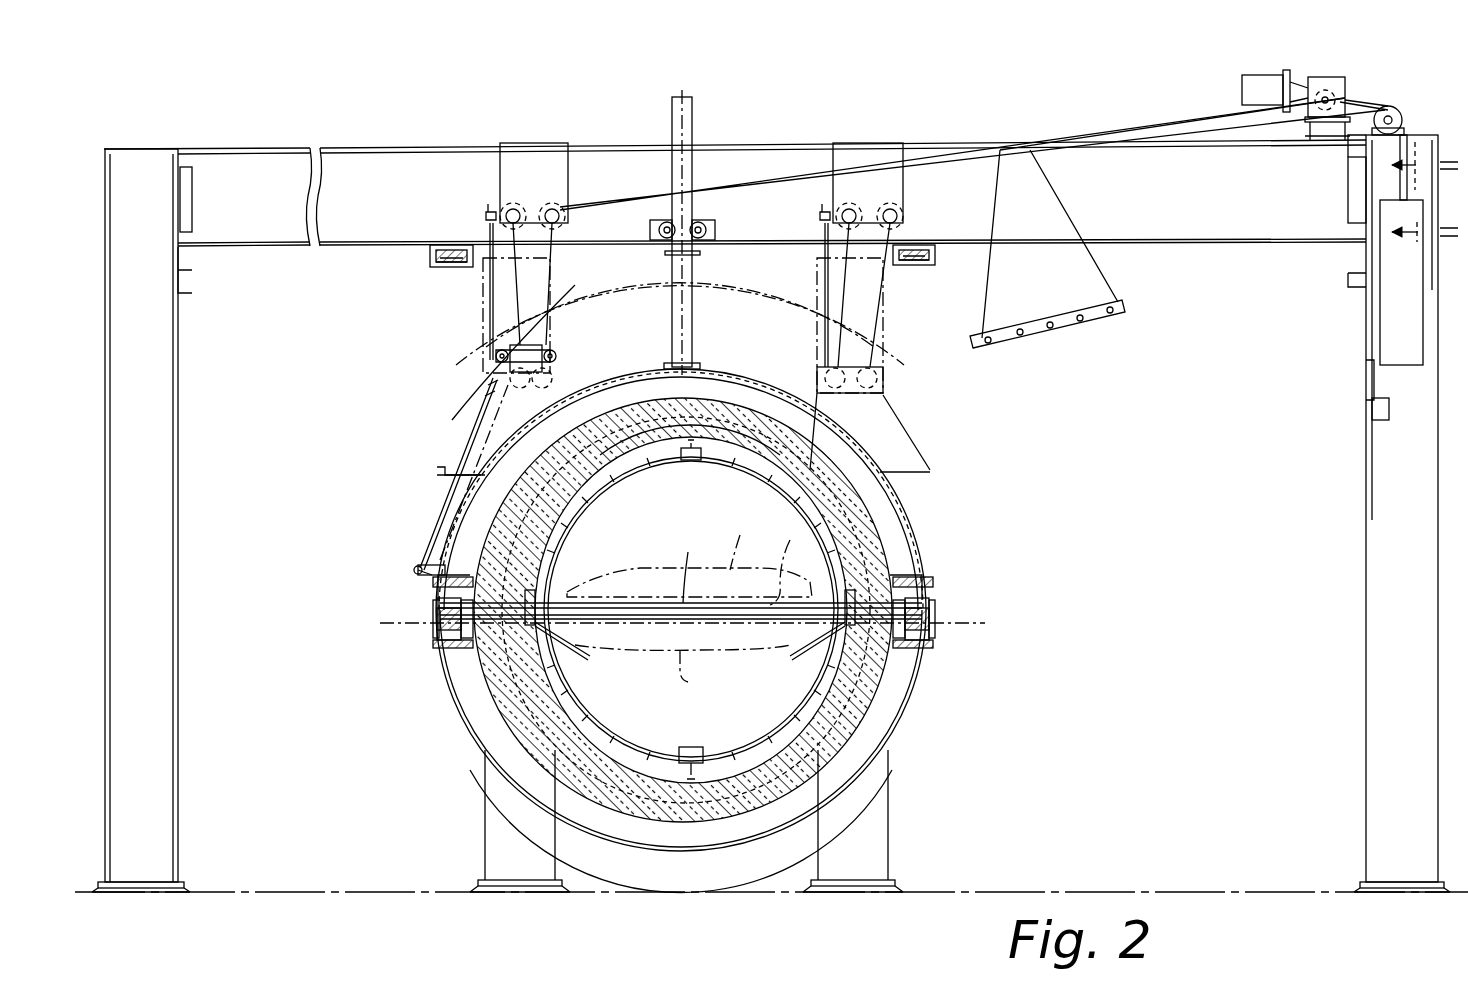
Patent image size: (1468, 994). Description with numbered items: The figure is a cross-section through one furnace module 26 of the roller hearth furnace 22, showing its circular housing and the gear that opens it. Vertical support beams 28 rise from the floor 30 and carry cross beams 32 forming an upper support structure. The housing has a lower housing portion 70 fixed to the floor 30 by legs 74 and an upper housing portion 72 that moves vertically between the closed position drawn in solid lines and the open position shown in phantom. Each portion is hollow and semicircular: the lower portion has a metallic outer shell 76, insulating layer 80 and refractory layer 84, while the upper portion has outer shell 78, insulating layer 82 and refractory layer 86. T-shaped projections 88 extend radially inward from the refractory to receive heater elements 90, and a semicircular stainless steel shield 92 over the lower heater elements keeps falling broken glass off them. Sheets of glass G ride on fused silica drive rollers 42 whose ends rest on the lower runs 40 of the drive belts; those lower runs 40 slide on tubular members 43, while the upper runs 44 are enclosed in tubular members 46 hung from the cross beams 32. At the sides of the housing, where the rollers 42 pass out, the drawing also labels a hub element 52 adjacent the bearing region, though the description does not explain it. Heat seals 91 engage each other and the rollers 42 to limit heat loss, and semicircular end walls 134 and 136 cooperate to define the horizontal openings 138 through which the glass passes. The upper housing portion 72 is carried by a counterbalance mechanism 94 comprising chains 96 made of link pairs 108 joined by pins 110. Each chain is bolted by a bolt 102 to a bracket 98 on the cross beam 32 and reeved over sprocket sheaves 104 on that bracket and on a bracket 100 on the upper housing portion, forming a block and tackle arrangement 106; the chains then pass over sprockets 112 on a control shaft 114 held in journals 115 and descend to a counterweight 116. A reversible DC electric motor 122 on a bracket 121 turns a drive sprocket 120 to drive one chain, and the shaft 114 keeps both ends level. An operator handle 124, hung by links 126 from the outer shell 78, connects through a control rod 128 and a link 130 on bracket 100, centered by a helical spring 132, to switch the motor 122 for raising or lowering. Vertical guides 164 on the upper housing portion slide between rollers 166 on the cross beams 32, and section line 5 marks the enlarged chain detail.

The section line 5- 5 is at (1421, 209).
The roller hearth furnace 22 is at (342, 140).
The furnace module 26 is at (315, 380).
The vertical support beam 28 is at (178, 452).
The floor 30 is at (362, 890).
The cross beam 32 is at (432, 148).
The lower run 40 is at (440, 630).
The drive roller 42 is at (626, 603).
The tubular member 43 is at (445, 650).
The upper run 44 is at (445, 246).
The tubular member 46 is at (450, 268).
The hub 52 is at (435, 612).
The lower housing portion 70 is at (925, 690).
The upper housing portion 72 is at (920, 520).
The leg 74 is at (485, 818).
The outer shell 76 is at (918, 716).
The outer shell 78 is at (895, 486).
The insulating layer 80 is at (850, 748).
The insulating layer 82 is at (880, 548).
The refractory layer 84 is at (720, 790).
The refractory layer 86 is at (735, 455).
The T-shaped projection 88 is at (628, 470).
The heater element 90 is at (565, 498).
The heat seal 91 is at (522, 602).
The stainless steel shield 92 is at (570, 728).
The counterbalance mechanism 94 is at (455, 325).
The chain 96 is at (615, 205).
The bracket 98 is at (530, 158).
The bracket 100 is at (545, 352).
The bolt 102 is at (488, 212).
The sprocket sheave 104 is at (565, 215).
The block and tackle arrangement 106 is at (478, 305).
The link 108 is at (1050, 322).
The pin 110 is at (1050, 330).
The sprocket 112 is at (1390, 106).
The control shaft 114 is at (1395, 112).
The journal 115 is at (1366, 140).
The counterweight 116 is at (1400, 365).
The drive sprocket 120 is at (1300, 100).
The bracket 121 is at (1326, 86).
The electric motor 122 is at (1242, 86).
The operator handle 124 is at (414, 570).
The link 126 is at (430, 560).
The control rod 128 is at (458, 450).
The link 130 is at (496, 356).
The helical spring 132 is at (486, 392).
The end wall 134 is at (747, 538).
The end wall 136 is at (705, 675).
The opening 138 is at (793, 569).
The vertical guide 164 is at (692, 325).
The roller 166 is at (700, 222).
The sheet of glass G is at (689, 587).